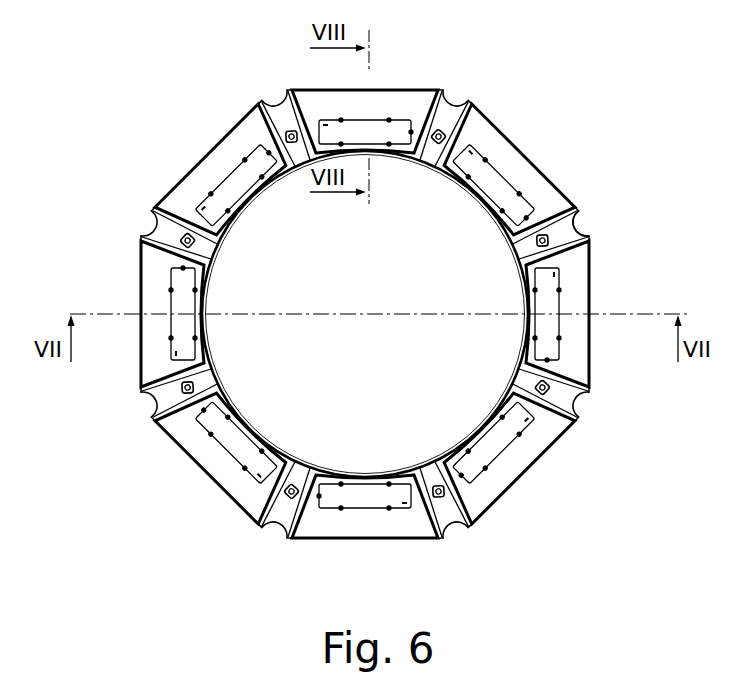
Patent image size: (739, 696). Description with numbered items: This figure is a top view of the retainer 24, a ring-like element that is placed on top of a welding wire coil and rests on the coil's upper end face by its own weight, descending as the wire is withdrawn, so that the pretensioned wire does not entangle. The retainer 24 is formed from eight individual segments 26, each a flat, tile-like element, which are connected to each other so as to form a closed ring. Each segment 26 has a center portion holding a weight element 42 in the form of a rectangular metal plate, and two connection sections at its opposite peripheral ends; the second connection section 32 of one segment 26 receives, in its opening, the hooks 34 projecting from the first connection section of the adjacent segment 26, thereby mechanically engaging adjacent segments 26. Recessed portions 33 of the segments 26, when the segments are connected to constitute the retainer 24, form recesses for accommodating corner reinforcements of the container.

The retainer 24 is at (624, 110).
The segment 26 is at (410, 100).
The second connection section 32 is at (445, 508).
The recessed portion 33 is at (577, 218).
The hook 34 is at (548, 387).
The weight element 42 is at (498, 188).